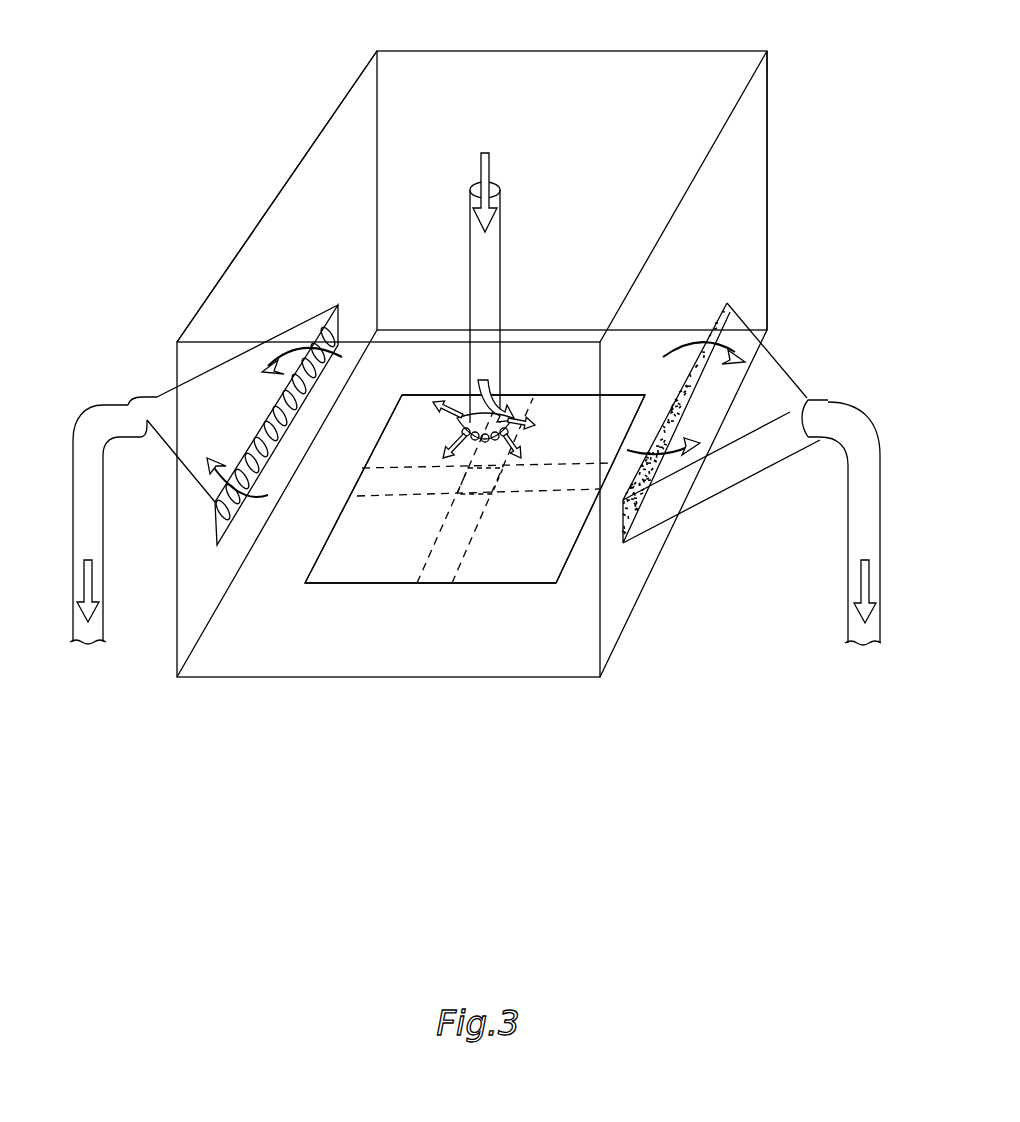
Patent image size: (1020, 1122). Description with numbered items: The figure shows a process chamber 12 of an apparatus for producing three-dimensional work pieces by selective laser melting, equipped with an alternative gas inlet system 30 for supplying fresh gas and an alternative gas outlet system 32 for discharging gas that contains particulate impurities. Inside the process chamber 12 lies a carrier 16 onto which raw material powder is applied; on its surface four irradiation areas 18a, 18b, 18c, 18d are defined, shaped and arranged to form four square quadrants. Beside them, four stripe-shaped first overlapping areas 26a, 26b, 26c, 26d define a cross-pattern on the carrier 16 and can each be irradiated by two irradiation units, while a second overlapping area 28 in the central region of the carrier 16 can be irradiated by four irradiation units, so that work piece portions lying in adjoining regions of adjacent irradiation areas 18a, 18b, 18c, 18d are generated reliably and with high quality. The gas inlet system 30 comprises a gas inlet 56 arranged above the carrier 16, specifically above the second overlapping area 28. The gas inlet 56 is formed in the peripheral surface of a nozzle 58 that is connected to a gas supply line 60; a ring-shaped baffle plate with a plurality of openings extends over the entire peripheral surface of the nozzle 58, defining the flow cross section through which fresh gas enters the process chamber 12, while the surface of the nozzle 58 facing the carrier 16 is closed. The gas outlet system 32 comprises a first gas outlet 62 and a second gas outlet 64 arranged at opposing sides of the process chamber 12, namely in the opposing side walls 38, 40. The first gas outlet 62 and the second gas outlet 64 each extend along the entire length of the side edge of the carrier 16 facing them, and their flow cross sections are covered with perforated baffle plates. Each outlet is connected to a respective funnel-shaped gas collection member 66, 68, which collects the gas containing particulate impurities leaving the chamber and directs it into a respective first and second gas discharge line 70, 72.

The process chamber 12 is at (692, 66).
The carrier 16 is at (573, 392).
The irradiation area 18a is at (410, 400).
The irradiation area 18b is at (340, 572).
The irradiation area 18c is at (622, 402).
The irradiation area 18d is at (515, 572).
The first overlapping area 26a is at (438, 570).
The first overlapping area 26b is at (533, 477).
The first overlapping area 26c is at (513, 398).
The first overlapping area 26d is at (368, 485).
The second overlapping area 28 is at (485, 482).
The gas inlet system 30 is at (520, 186).
The gas outlet system 32 is at (751, 451).
The side wall 38 is at (300, 183).
The side wall 40 is at (766, 232).
The gas inlet 56 is at (457, 433).
The nozzle 58 is at (473, 410).
The gas supply line 60 is at (500, 227).
The first gas outlet 62 is at (344, 320).
The second gas outlet 64 is at (724, 304).
The funnel-shaped gas collection member 66 is at (155, 395).
The funnel-shaped gas collection member 68 is at (777, 377).
The first gas discharge line 70 is at (102, 410).
The second gas discharge line 72 is at (835, 413).